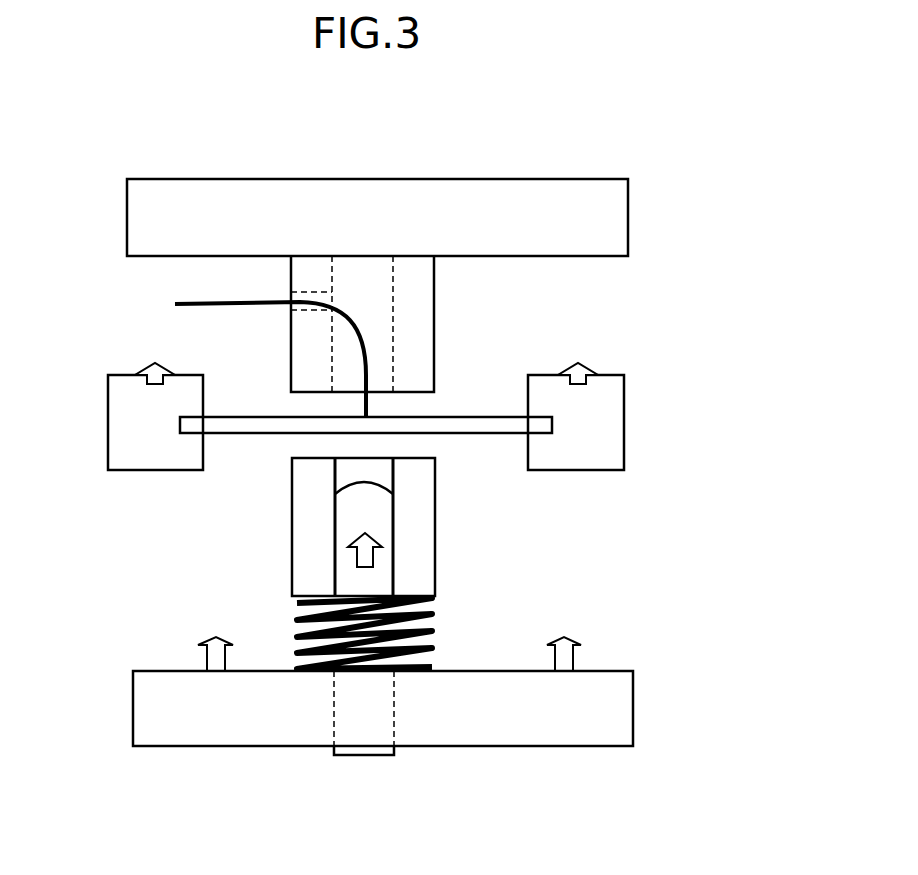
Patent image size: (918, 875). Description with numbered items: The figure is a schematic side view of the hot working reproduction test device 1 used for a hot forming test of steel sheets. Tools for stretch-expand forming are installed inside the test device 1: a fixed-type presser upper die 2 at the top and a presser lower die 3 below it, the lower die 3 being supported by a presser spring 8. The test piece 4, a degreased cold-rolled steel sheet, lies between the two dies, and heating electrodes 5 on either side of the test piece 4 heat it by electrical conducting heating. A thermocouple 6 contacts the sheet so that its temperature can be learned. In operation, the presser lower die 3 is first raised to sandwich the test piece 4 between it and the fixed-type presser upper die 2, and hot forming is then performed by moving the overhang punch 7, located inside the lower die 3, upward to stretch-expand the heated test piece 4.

The hot working reproduction test device 1 is at (747, 193).
The fixed-type presser upper die 2 is at (415, 335).
The presser lower die 3 is at (416, 567).
The test piece 4 is at (440, 417).
The heating electrode 5 is at (128, 420).
The thermocouple 6 is at (225, 298).
The overhang punch 7 is at (352, 583).
The presser spring 8 is at (425, 628).